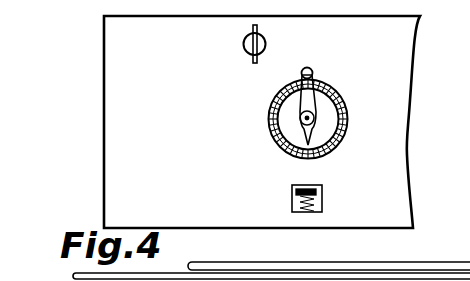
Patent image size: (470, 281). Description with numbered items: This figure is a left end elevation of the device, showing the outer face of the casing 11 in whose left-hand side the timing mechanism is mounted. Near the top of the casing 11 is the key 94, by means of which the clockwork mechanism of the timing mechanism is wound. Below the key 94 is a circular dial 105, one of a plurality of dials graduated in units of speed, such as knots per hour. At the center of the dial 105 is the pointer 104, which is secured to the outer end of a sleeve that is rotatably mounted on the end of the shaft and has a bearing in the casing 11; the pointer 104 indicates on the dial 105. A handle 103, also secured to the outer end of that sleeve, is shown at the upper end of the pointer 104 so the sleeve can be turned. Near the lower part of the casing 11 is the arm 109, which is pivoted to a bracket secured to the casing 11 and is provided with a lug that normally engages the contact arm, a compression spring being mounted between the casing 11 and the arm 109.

The casing 11 is at (412, 199).
The key 94 is at (266, 44).
The handle 103 is at (311, 70).
The pointer 104 is at (312, 139).
The dials 105 is at (268, 103).
The arm 109 is at (323, 197).